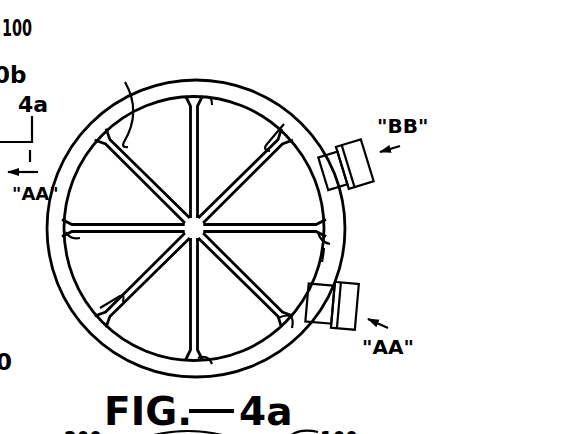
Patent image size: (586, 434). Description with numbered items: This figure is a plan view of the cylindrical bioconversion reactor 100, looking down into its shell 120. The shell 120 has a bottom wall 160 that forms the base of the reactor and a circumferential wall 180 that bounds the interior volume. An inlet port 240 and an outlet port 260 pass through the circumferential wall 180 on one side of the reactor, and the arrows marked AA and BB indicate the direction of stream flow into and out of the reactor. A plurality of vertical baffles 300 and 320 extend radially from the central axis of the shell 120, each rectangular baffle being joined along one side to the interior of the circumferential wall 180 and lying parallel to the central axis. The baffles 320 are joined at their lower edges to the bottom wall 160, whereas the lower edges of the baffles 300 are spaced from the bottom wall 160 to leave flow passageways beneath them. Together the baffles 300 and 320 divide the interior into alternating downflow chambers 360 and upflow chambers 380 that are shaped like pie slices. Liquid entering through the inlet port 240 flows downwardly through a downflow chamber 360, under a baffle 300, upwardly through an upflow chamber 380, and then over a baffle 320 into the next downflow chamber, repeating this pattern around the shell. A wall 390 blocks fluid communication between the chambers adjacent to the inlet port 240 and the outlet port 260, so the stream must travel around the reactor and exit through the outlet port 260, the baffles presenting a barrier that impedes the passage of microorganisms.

The bioconversion reactor 100 is at (276, 58).
The shell 120 is at (190, 81).
The bottom wall 160 is at (269, 101).
The circumferential wall 180 is at (180, 81).
The inlet port 240 is at (337, 330).
The outlet port 260 is at (369, 190).
The baffles 300 is at (125, 82).
The baffles 320 is at (206, 98).
The downflow chambers 360 is at (195, 228).
The upflow chambers 380 is at (190, 228).
The wall 390 is at (328, 250).